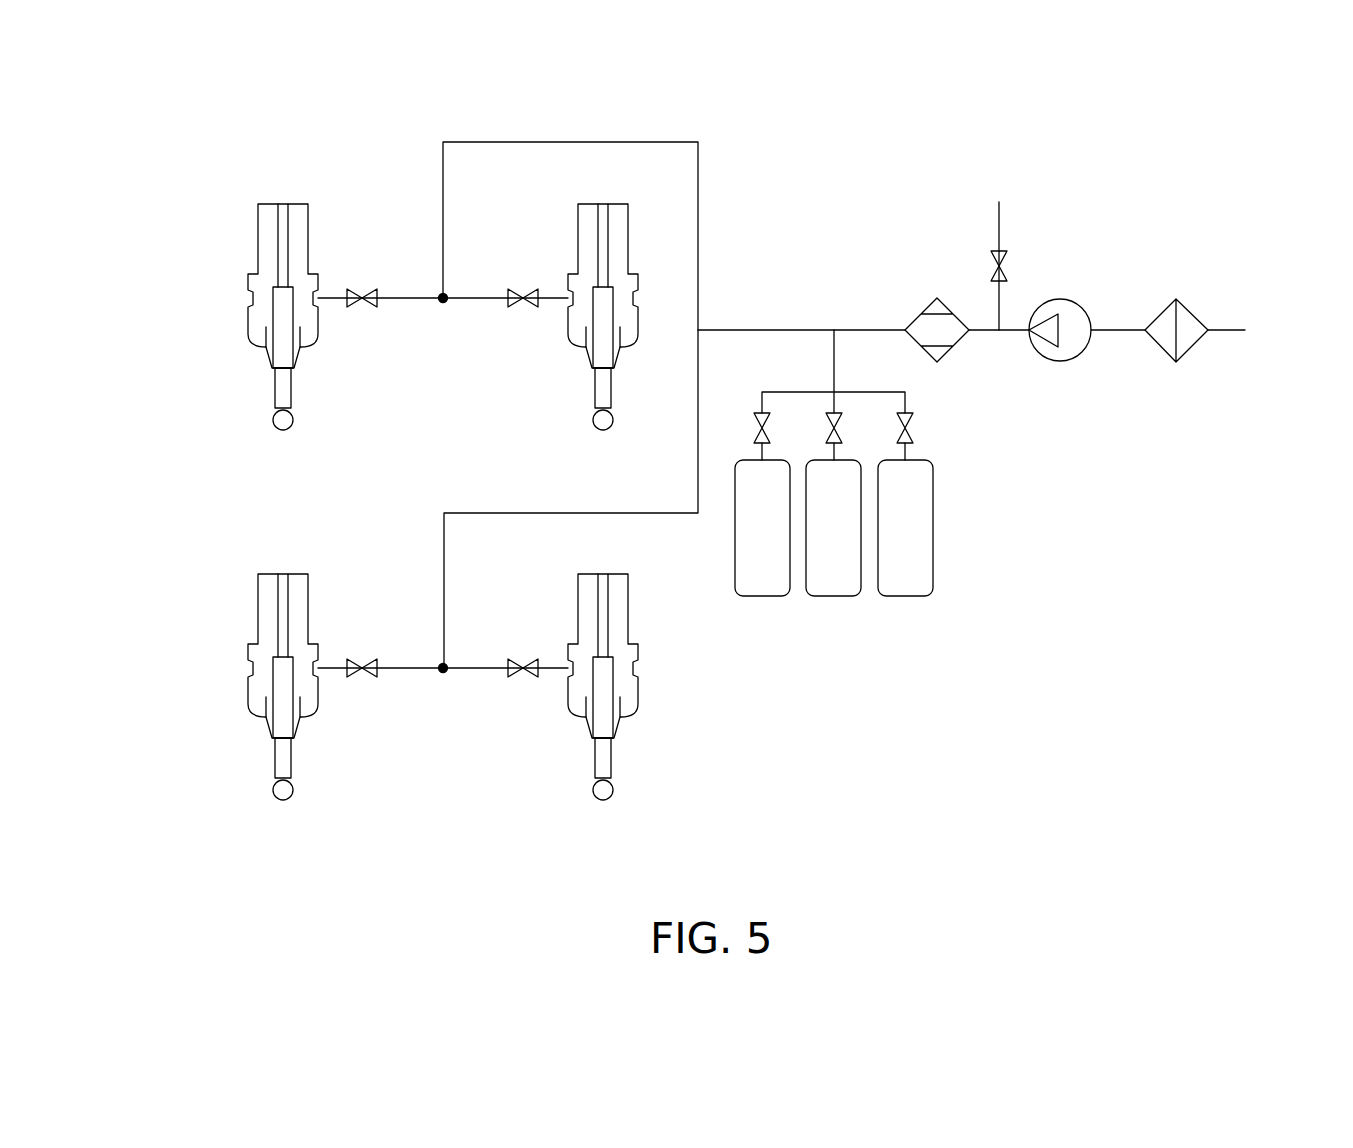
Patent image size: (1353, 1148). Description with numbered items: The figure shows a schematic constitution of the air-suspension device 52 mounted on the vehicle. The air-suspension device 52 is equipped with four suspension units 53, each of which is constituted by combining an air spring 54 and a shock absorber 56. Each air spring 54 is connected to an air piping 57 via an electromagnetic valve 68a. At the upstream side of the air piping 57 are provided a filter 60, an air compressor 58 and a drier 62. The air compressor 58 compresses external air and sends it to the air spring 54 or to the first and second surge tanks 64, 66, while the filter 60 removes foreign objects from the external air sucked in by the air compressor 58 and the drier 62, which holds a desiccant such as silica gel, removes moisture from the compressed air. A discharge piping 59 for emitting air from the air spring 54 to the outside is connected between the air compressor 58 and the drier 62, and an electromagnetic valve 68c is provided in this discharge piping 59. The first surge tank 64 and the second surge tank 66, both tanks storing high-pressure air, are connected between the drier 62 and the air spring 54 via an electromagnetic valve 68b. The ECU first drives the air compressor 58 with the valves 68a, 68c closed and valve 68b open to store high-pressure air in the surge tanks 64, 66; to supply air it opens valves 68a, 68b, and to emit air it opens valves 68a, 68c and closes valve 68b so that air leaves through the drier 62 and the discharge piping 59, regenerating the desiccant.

The air-suspension device 52 is at (806, 140).
The suspension unit 53 is at (228, 278).
The air spring 54 is at (257, 222).
The shock absorber 56 is at (275, 380).
The air piping 57 is at (554, 141).
The air compressor 58 is at (1062, 360).
The discharge piping 59 is at (999, 222).
The filter 60 is at (1195, 350).
The drier 62 is at (932, 298).
The first surge tank 64 is at (763, 596).
The second surge tank 66 is at (908, 596).
The electromagnetic valve 68a is at (356, 308).
The electromagnetic valve 68b is at (770, 435).
The electromagnetic valve 68c is at (1006, 266).